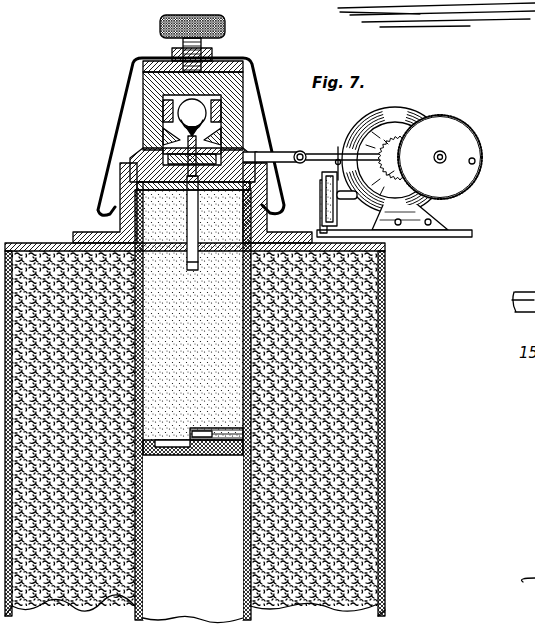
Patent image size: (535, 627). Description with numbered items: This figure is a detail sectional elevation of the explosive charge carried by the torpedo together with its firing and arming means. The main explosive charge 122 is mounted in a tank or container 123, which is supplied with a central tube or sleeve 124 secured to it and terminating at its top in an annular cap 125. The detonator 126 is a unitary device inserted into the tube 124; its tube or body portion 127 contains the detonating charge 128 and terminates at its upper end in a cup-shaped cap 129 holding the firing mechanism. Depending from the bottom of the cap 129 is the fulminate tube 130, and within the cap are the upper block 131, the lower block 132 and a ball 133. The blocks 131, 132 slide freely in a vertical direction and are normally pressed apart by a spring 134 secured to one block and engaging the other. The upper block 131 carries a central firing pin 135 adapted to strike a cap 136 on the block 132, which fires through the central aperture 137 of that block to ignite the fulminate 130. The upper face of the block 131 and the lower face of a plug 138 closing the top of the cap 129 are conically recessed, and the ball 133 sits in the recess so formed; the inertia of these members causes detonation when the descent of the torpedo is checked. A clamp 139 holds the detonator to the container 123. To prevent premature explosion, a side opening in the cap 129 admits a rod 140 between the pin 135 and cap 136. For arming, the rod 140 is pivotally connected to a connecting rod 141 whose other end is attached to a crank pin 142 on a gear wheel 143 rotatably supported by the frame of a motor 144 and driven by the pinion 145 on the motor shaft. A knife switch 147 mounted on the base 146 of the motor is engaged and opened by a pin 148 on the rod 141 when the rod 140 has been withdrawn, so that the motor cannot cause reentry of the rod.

The main explosive charge 122 is at (385, 334).
The tank or container 123 is at (385, 400).
The central tube or sleeve 124 is at (142, 528).
The annular cap 125 is at (85, 228).
The detonator 126 is at (222, 443).
The tube or body portion 127 is at (141, 343).
The detonating charge 128 is at (162, 447).
The cup-shaped cap 129 is at (150, 92).
The fulminate tube 130 is at (188, 262).
The upper block 131 is at (168, 134).
The lower block 132 is at (178, 163).
The ball 133 is at (192, 114).
The spring 134 is at (160, 172).
The firing pin 135 is at (208, 143).
The cap 136 is at (270, 147).
The central aperture 137 is at (198, 187).
The plug 138 is at (197, 71).
The clamp 139 is at (256, 76).
The rod 140 is at (275, 157).
The connecting rod 141 is at (350, 153).
The crank pin 142 is at (446, 155).
The gear wheel 143 is at (474, 164).
The motor 144 is at (452, 199).
The pinion 145 is at (410, 142).
The base 146 is at (410, 235).
The knife switch 147 is at (341, 206).
The pin 148 is at (331, 163).